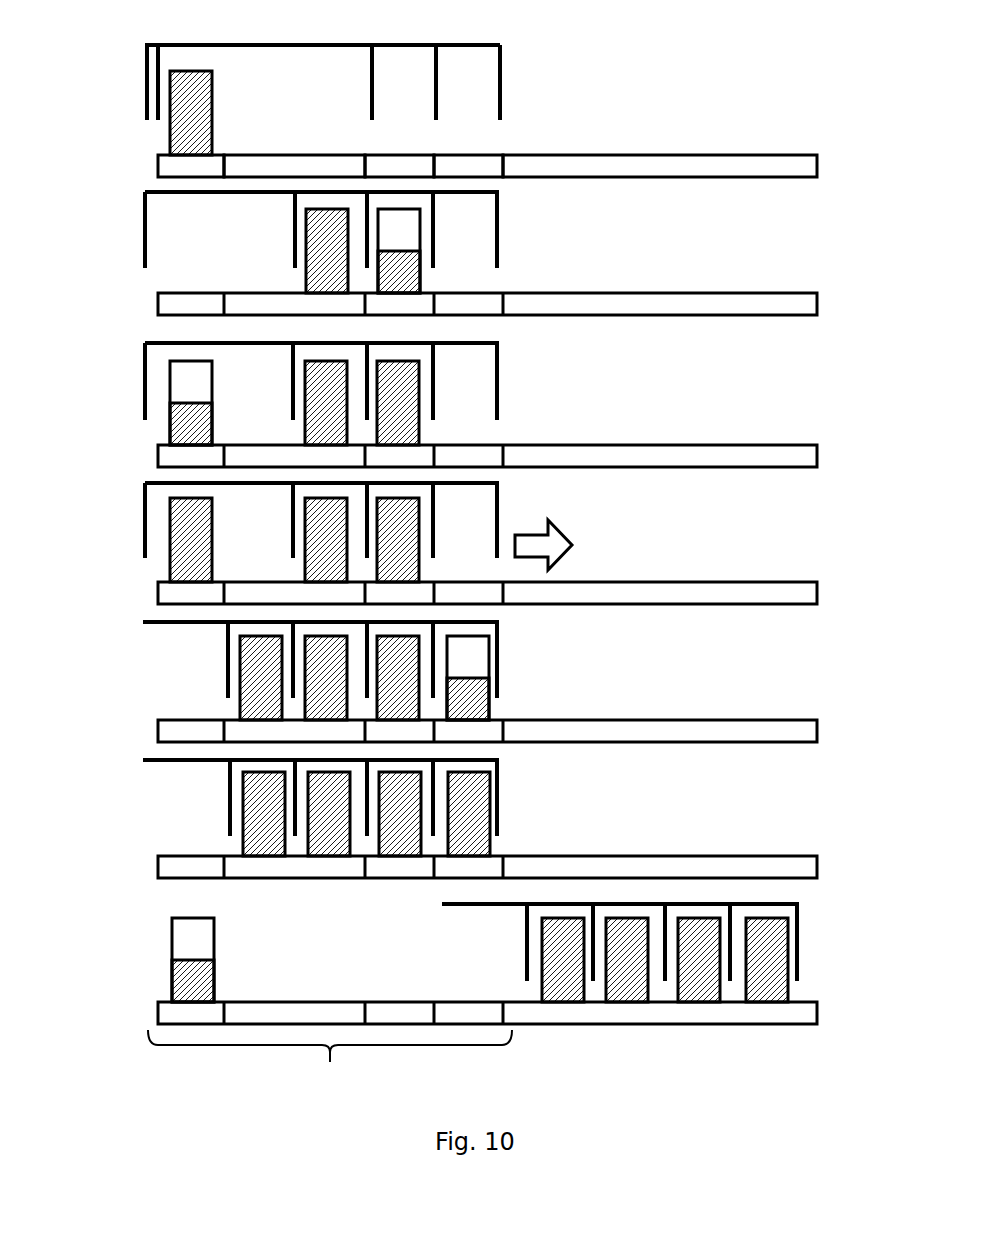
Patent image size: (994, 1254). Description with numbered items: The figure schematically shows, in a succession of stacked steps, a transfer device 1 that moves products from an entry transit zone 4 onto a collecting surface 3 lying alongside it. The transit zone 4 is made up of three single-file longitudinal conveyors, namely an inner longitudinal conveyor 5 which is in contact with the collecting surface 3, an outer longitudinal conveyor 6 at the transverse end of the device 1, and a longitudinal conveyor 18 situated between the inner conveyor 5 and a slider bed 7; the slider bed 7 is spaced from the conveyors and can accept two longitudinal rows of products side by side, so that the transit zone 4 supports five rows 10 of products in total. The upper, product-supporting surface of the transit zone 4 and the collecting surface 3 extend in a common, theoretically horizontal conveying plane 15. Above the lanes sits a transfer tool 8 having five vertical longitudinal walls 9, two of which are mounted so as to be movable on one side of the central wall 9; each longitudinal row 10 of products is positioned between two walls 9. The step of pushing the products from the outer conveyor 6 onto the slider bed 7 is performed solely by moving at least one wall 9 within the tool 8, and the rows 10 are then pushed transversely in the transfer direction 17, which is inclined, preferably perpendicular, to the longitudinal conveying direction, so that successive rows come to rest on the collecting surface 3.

The transfer device 1 is at (611, 75).
The collecting surface 3 is at (755, 282).
The entry transit zone 4 is at (330, 1063).
The inner longitudinal conveyor 5 is at (477, 175).
The outer longitudinal conveyor 6 is at (171, 166).
The slider bed 7 is at (276, 164).
The transfer tool 8 is at (150, 744).
The vertical longitudinal wall 9 is at (354, 365).
The longitudinal row of products 10 is at (479, 835).
The conveying plane 15 is at (705, 428).
The transfer direction 17 is at (589, 526).
The longitudinal conveyor 18 is at (389, 158).